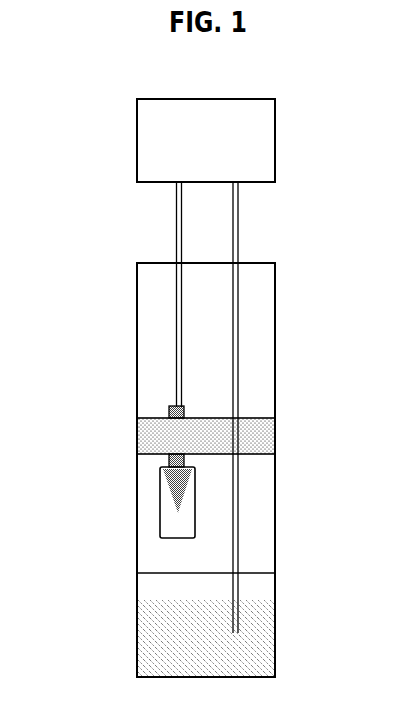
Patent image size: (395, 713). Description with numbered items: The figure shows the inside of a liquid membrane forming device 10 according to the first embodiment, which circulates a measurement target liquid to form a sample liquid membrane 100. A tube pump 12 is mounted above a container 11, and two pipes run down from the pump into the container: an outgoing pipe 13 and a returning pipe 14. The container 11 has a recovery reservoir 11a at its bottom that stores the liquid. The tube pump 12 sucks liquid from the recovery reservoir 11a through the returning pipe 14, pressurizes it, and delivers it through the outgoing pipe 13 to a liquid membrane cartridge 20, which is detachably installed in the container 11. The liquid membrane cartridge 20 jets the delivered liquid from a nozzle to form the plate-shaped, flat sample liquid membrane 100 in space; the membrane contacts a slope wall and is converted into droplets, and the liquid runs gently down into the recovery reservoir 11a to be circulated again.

The liquid membrane forming device 10 is at (195, 74).
The container 11 is at (137, 330).
The recovery reservoir 11a is at (160, 615).
The tube pump 12 is at (275, 145).
The outgoing pipe 13 is at (178, 232).
The returning pipe 14 is at (233, 232).
The liquid membrane cartridge 20 is at (160, 475).
The sample liquid membrane 100 is at (170, 500).